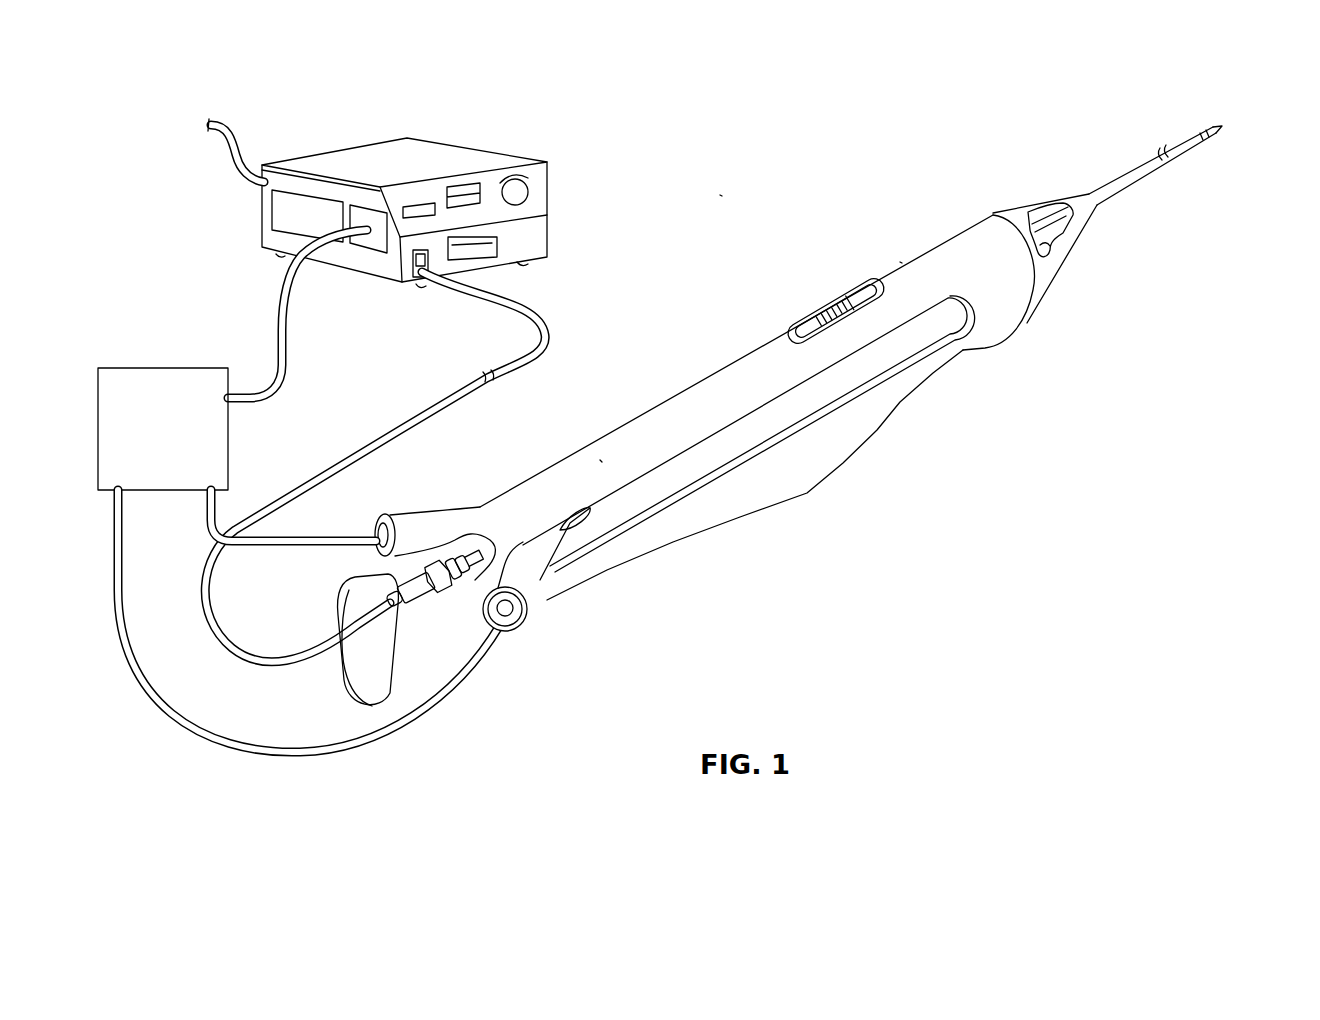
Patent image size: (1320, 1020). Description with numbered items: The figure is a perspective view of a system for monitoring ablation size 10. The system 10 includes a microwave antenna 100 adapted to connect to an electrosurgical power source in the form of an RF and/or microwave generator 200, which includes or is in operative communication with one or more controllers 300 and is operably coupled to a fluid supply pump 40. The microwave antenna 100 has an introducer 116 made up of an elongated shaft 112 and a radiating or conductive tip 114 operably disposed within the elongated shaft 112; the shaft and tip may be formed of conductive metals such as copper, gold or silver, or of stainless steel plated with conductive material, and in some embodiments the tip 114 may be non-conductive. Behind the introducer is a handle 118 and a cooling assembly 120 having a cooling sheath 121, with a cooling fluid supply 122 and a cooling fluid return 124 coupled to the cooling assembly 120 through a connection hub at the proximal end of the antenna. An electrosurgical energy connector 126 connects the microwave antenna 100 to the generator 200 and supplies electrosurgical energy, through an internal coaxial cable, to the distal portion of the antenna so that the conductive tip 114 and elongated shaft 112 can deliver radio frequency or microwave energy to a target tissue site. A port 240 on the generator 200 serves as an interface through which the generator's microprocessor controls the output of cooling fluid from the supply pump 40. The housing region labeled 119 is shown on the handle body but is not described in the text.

The system for monitoring ablation size 10 is at (712, 183).
The fluid supply pump 40 is at (150, 442).
The microwave antenna 100 is at (918, 227).
The elongated shaft 112 is at (1127, 178).
The conductive tip 114 is at (1217, 128).
The introducer 116 is at (1120, 147).
The handle 118 is at (683, 393).
The handle body 119 is at (795, 403).
The cooling assembly 120 is at (880, 352).
The cooling sheath 121 is at (468, 560).
The cooling fluid supply 122 is at (375, 520).
The cooling fluid return 124 is at (520, 618).
The electrosurgical energy connector 126 is at (383, 572).
The generator 200 is at (380, 157).
The port 240 is at (373, 247).
The controller 300 is at (287, 210).